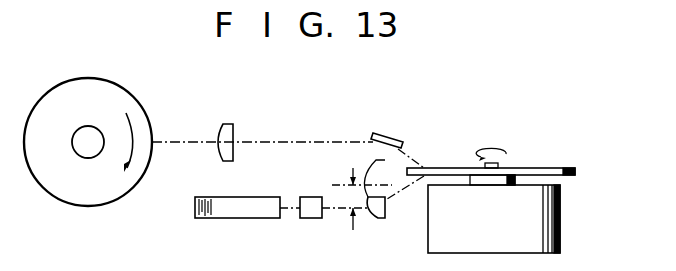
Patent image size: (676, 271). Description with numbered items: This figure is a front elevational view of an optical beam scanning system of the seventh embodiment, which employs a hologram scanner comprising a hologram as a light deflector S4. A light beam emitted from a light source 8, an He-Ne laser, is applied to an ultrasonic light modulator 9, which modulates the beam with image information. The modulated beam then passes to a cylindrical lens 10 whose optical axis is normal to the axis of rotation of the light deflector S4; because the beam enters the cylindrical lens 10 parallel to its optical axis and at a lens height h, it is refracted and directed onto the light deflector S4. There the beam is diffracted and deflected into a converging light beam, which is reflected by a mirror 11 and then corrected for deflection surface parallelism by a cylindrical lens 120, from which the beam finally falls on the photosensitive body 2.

The photosensitive body 2 is at (147, 110).
The cylindrical lens 120 is at (232, 129).
The mirror 11 is at (401, 139).
The light source 8 is at (257, 217).
The ultrasonic light modulator 9 is at (308, 218).
The cylindrical lens 10 is at (373, 219).
The lens height h is at (354, 196).
The light deflector S4 is at (582, 163).